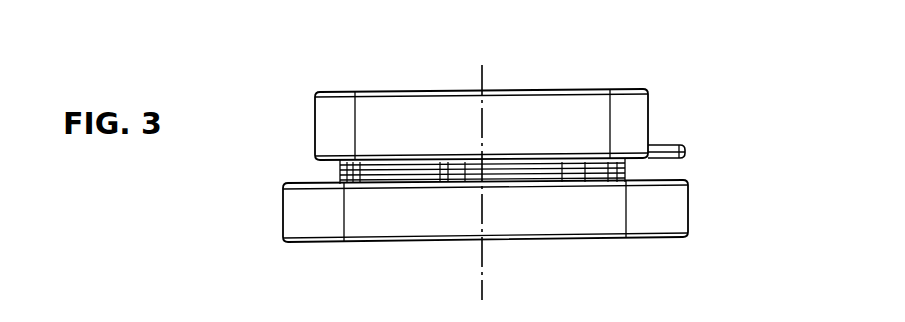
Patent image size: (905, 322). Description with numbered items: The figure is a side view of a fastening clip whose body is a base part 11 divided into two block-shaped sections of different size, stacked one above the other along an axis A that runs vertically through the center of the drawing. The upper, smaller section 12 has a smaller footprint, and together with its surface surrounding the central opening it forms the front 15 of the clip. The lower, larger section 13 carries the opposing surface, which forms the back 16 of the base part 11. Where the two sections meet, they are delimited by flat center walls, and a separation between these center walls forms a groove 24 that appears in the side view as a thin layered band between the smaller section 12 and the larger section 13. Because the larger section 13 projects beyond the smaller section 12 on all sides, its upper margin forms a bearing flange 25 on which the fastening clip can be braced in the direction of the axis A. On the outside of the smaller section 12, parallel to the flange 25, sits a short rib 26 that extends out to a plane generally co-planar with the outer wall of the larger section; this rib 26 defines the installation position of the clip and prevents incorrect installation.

The axis A is at (481, 78).
The base part 11 is at (312, 111).
The smaller section 12 is at (649, 108).
The larger section 13 is at (689, 210).
The front 15 is at (578, 91).
The back 16 is at (648, 238).
The groove 24 is at (345, 176).
The bearing flange 25 is at (283, 220).
The rib 26 is at (689, 143).